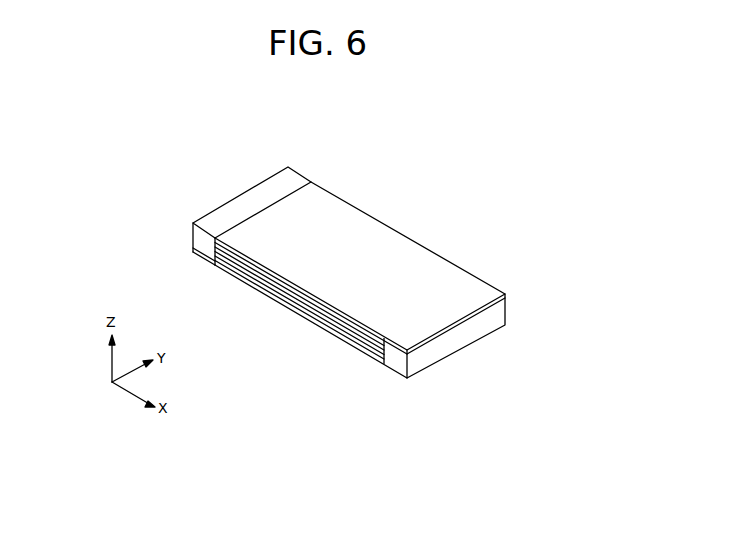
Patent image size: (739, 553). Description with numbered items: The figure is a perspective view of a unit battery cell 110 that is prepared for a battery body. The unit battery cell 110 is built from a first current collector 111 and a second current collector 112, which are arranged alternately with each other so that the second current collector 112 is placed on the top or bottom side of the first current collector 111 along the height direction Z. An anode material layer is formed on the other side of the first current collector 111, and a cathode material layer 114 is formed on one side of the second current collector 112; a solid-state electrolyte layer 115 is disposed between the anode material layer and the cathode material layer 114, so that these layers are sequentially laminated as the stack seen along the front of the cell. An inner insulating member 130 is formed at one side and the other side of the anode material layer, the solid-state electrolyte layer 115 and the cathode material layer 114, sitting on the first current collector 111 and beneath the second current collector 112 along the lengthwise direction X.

The unit battery cell 110 is at (398, 222).
The first current collector 111 is at (212, 263).
The second current collector 112 is at (248, 278).
The cathode material layer 114 is at (338, 320).
The solid-state electrolyte layer 115 is at (293, 300).
The inner insulating member 130 is at (237, 202).